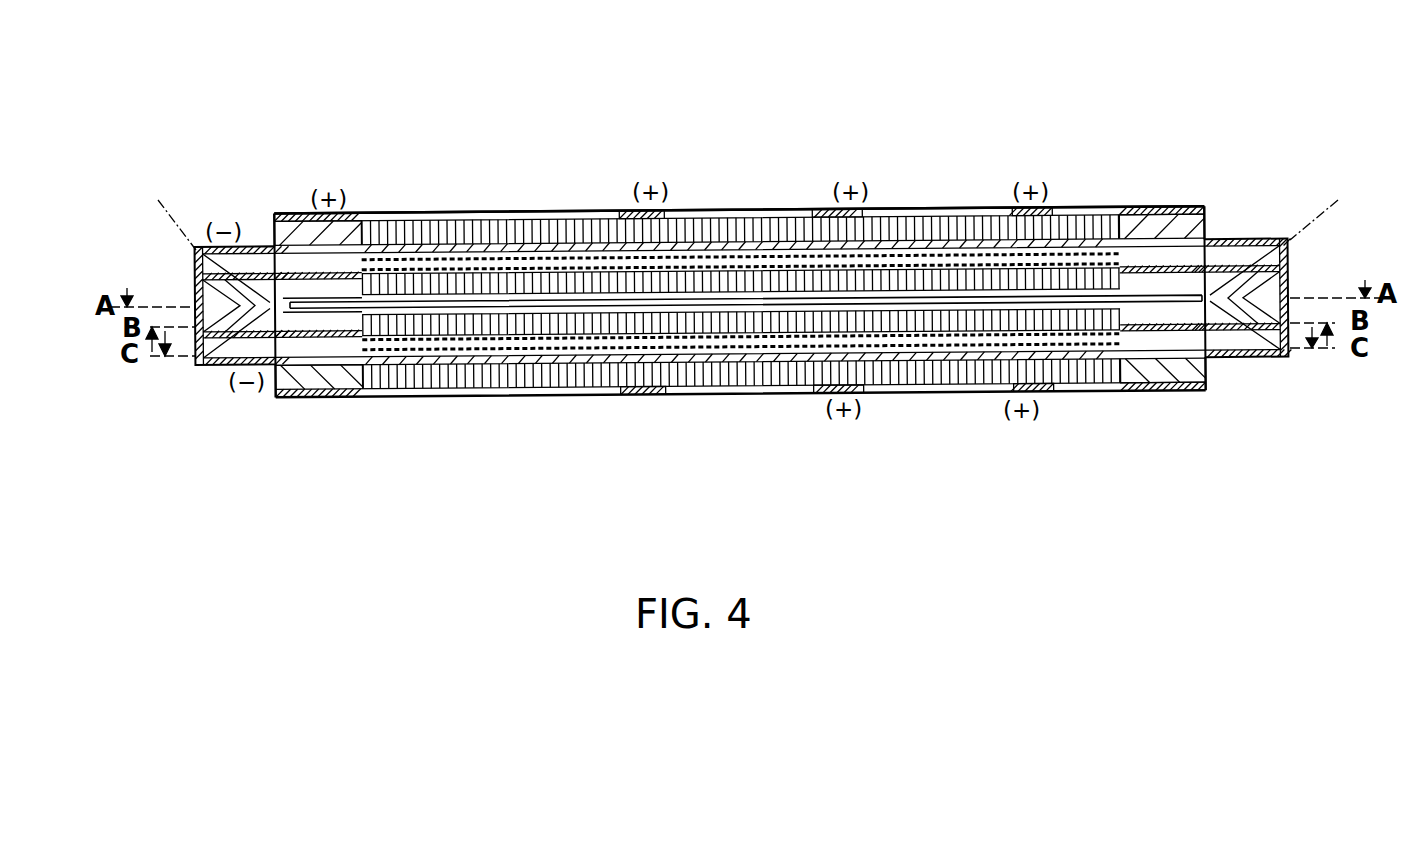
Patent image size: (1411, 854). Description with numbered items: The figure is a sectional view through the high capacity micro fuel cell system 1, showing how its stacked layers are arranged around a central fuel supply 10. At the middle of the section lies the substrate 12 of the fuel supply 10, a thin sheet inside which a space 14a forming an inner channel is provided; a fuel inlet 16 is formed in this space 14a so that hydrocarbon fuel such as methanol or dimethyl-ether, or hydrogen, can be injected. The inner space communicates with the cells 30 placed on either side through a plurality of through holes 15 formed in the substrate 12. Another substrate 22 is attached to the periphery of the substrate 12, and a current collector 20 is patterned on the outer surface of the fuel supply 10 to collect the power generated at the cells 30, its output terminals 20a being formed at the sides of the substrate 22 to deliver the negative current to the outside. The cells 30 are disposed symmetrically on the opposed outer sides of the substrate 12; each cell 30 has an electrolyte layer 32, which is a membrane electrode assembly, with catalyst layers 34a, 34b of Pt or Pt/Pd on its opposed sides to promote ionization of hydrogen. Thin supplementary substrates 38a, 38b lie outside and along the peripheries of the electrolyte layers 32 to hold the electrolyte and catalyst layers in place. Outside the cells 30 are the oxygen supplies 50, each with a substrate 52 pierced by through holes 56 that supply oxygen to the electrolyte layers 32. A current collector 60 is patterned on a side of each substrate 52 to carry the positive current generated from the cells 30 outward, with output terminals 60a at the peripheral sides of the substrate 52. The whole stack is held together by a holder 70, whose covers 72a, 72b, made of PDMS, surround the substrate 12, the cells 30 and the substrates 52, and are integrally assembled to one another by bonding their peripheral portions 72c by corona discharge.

The high capacity micro fuel cell system 1 is at (1216, 98).
The fuel supply 10 is at (196, 292).
The substrate 12 is at (1285, 285).
The space 14a is at (868, 310).
The through holes 15 is at (420, 213).
The fuel inlet 16 is at (756, 212).
The current collector 20 is at (275, 245).
The output terminals 20a is at (245, 240).
The substrate 22 is at (255, 228).
The cells 30 is at (1085, 245).
The electrolyte layer 32 is at (480, 235).
The catalyst layer 34a is at (462, 262).
The catalyst layer 34b is at (525, 250).
The supplementary substrate 38a is at (305, 235).
The supplementary substrate 38b is at (292, 225).
The oxygen supplies 50 is at (1140, 215).
The substrate 52 is at (735, 255).
The through holes 56 is at (502, 240).
The current collectors 60 is at (385, 245).
The output terminals 60a is at (255, 245).
The holder 70 is at (1204, 204).
The cover 72a is at (190, 228).
The cover 72b is at (190, 365).
The peripheral portions 72c is at (196, 300).